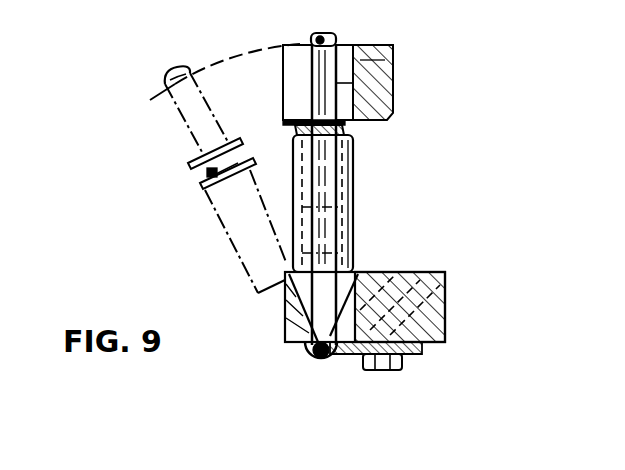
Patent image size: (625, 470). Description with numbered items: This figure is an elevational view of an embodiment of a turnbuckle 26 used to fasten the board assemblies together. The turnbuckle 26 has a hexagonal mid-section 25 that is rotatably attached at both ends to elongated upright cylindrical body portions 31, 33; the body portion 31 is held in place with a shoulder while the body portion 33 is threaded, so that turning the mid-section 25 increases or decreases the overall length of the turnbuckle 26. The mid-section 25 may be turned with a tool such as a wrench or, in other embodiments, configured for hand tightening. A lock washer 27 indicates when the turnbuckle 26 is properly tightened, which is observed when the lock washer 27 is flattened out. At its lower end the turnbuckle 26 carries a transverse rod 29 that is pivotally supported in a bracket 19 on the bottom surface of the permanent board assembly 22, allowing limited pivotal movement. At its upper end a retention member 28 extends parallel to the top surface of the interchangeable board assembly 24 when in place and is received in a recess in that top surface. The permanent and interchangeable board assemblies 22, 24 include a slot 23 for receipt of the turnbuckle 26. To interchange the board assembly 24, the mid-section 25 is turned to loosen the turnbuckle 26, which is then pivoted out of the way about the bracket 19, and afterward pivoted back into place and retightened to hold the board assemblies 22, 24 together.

The bracket 19 is at (308, 363).
The permanent board assembly 22 is at (447, 312).
The slot 23 is at (298, 77).
The interchangeable board assembly 24 is at (380, 42).
The hexagonal mid-section 25 is at (353, 203).
The turnbuckle 26 is at (478, 122).
The lock washer 27 is at (342, 133).
The retention member 28 is at (337, 42).
The transverse rod 29 is at (333, 365).
The upright cylindrical body portion 31 is at (377, 272).
The upright cylindrical body portion 33 is at (380, 82).